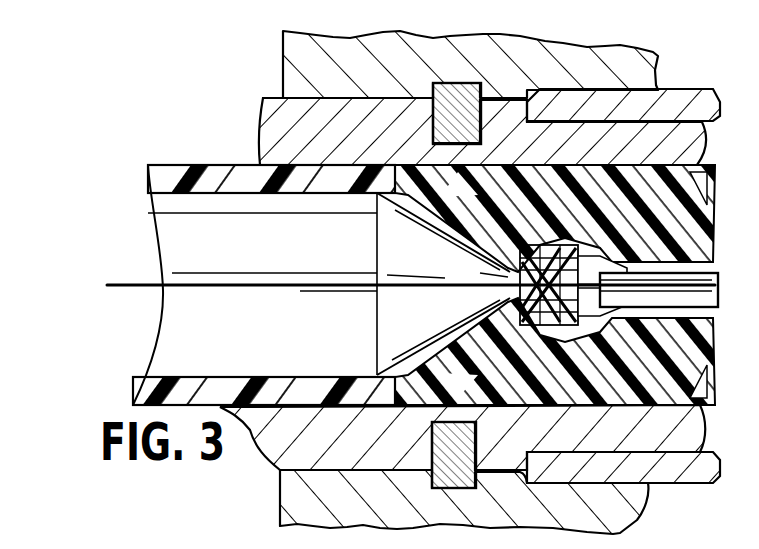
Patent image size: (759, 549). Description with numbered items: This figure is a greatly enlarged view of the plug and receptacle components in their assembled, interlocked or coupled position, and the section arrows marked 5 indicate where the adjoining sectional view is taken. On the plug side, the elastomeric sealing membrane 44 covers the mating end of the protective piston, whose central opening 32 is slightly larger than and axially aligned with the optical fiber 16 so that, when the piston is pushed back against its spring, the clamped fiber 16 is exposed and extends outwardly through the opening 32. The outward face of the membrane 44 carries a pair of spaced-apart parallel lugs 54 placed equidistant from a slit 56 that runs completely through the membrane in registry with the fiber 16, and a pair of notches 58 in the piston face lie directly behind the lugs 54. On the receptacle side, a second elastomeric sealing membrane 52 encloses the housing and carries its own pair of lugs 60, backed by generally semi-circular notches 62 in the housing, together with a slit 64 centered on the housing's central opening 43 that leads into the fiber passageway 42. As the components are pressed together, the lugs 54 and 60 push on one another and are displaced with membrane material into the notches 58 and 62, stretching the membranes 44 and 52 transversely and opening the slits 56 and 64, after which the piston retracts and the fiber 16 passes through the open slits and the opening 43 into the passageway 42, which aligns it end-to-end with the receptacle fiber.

The section line 5- 5 is at (532, 144).
The optical fiber 16 is at (258, 290).
The central opening 32 is at (520, 293).
The fiber passageway 42 is at (670, 272).
The central opening 43 is at (602, 302).
The elastomeric sealing membrane 44 is at (487, 177).
The elastomeric sealing membrane 52 is at (633, 177).
The lugs 54 is at (392, 211).
The slit 56 is at (447, 268).
The notches 58 is at (458, 246).
The lugs 60 is at (568, 248).
The notches 62 is at (632, 268).
The slit 64 is at (602, 270).